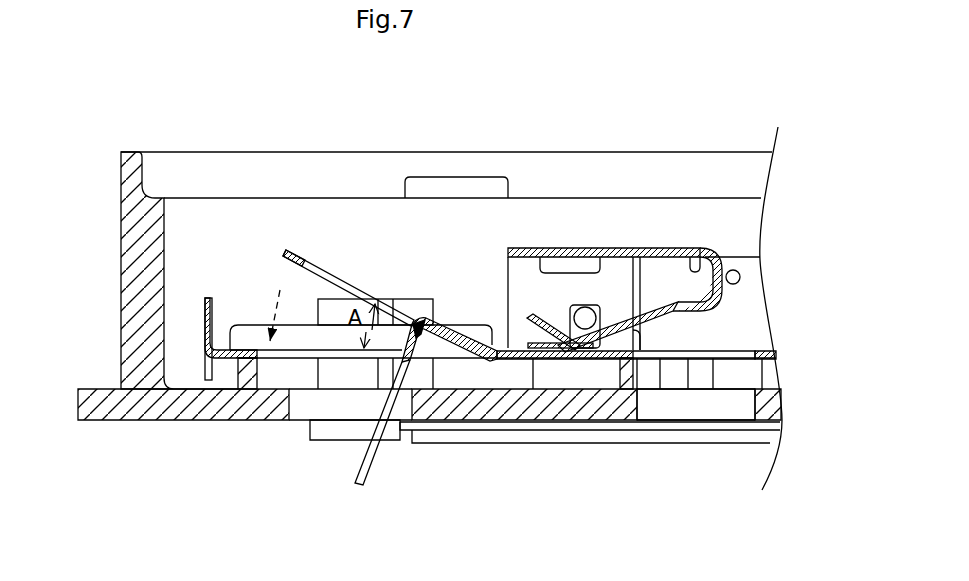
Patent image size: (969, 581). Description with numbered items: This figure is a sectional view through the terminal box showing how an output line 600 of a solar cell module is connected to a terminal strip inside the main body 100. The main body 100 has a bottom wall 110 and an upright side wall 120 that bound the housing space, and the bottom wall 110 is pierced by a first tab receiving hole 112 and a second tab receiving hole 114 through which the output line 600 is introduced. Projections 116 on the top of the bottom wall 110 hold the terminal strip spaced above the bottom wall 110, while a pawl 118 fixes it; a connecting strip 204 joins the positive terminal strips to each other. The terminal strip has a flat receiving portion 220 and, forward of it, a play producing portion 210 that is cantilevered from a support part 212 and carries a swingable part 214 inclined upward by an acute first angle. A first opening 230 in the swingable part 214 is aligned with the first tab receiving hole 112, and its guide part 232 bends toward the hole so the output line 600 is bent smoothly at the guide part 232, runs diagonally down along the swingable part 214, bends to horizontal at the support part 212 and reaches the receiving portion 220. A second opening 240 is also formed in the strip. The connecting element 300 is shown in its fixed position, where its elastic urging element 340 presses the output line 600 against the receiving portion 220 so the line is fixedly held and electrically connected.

The main body 100 is at (138, 133).
The bottom wall 110 is at (181, 377).
The first tab receiving hole 112 is at (337, 409).
The second tab receiving hole 114 is at (689, 411).
The projection 116 is at (245, 375).
The pawl 118 is at (332, 298).
The side wall 120 is at (133, 276).
The connecting strip 204 is at (203, 305).
The play producing portion 210 is at (458, 116).
The support part 212 is at (499, 334).
The swingable part 214 is at (352, 268).
The receiving portion 220 is at (533, 360).
The first opening 230 is at (399, 302).
The guide part 232 is at (429, 333).
The second opening 240 is at (735, 349).
The connecting element 300 is at (623, 246).
The urging element 340 is at (601, 357).
The output line 600 is at (367, 468).